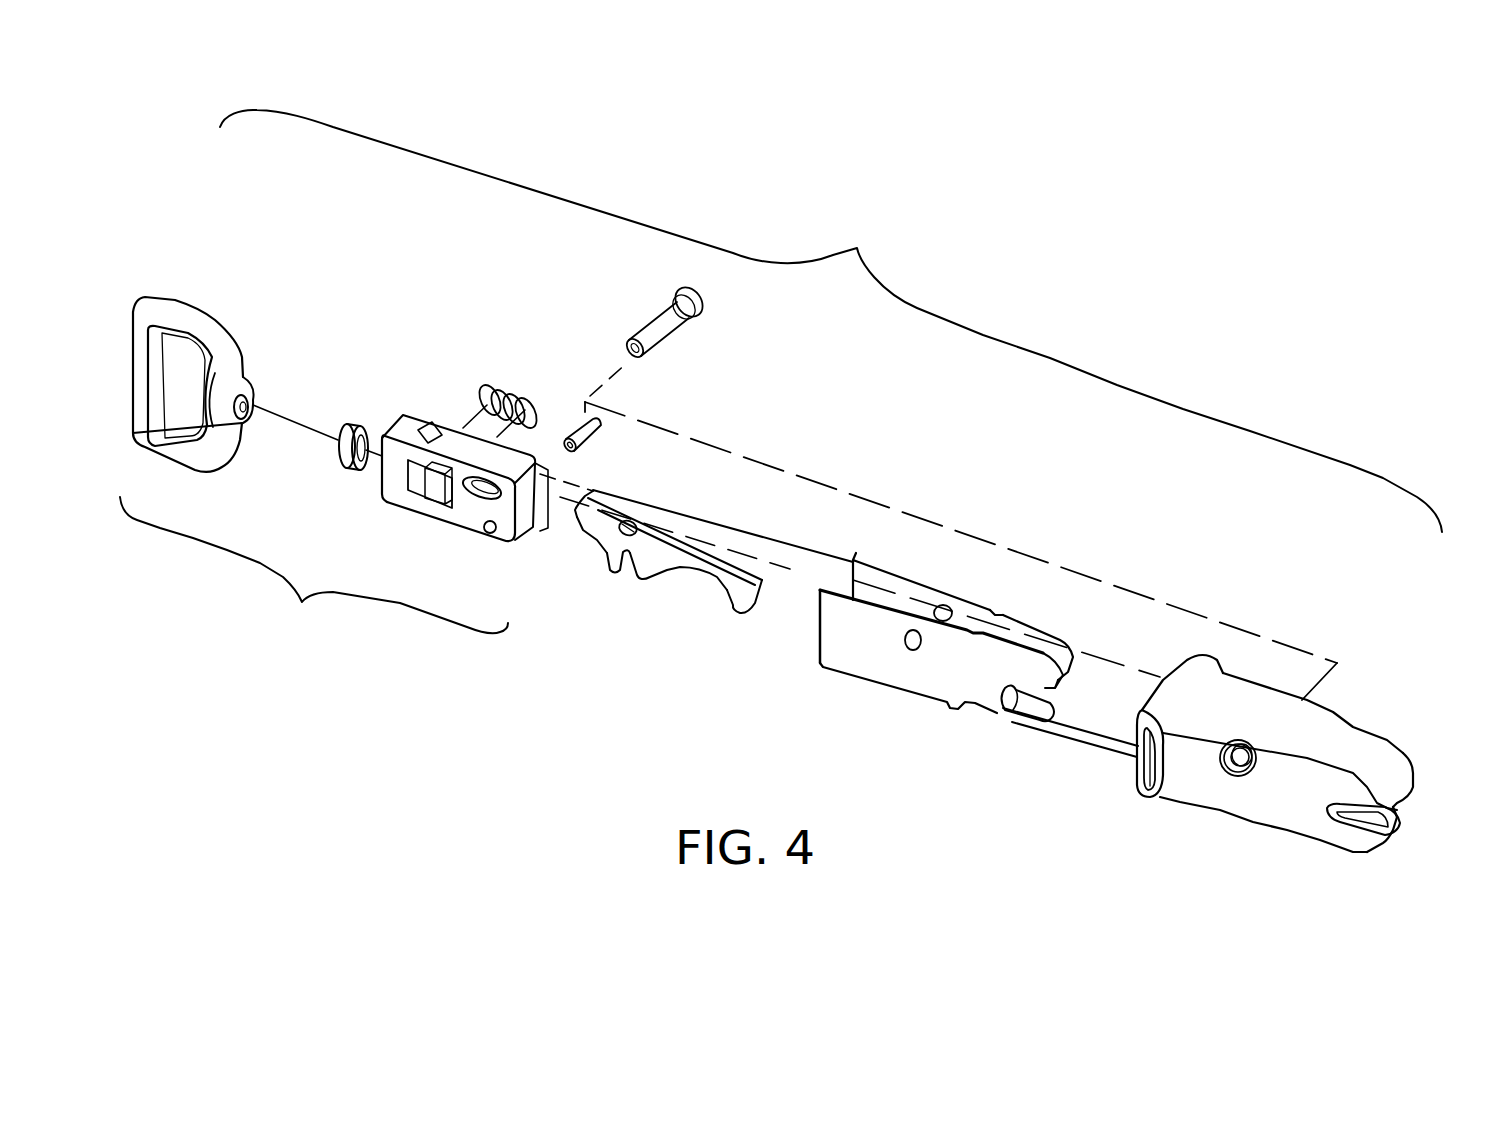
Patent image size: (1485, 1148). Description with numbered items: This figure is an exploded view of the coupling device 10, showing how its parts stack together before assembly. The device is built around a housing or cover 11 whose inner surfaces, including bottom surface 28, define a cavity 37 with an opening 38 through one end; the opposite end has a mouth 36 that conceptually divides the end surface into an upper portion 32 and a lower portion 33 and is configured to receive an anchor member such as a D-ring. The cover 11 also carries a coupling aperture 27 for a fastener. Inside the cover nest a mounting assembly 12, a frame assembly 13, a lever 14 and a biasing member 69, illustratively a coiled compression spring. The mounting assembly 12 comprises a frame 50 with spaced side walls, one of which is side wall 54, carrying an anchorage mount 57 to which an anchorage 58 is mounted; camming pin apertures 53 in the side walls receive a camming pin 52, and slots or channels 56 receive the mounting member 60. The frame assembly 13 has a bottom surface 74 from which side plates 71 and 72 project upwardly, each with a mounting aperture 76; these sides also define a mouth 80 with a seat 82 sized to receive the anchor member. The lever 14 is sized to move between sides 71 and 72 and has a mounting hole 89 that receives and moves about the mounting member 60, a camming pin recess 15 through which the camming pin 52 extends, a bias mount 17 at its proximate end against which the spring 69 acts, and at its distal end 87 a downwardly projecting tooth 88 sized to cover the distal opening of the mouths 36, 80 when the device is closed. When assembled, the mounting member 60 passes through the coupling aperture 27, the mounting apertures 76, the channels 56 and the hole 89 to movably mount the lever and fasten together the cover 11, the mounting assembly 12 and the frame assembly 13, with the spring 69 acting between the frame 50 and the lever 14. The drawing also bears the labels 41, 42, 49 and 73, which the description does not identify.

The coupling device 10 is at (792, 505).
The housing or cover 11 is at (1388, 668).
The mounting assembly 12 is at (360, 443).
The frame assembly 13 is at (882, 690).
The lever member 14 is at (650, 580).
The camming pin recess 15 is at (628, 560).
The bias mount 17 is at (577, 520).
The coupling aperture 27 is at (1236, 777).
The bottom surface 28 is at (1258, 818).
The upper portion 32 is at (1405, 770).
The lower portion 33 is at (1390, 830).
The mouth 36 is at (1403, 808).
The cavity 37 is at (1182, 662).
The opening 38 is at (1137, 768).
The opening 41 is at (1152, 797).
The top edge 42 is at (1225, 668).
The side wall 49 is at (1298, 820).
The frame 50 is at (405, 414).
The camming pin 52 is at (575, 432).
The camming pin apertures 53 is at (491, 534).
The side wall 54 is at (458, 520).
The slots or channels 56 is at (480, 485).
The anchorage mount 57 is at (352, 428).
The anchorage 58 is at (189, 305).
The mounting member 60 is at (703, 310).
The biasing member 69 is at (497, 392).
The side plate 71 is at (882, 580).
The side plate 72 is at (846, 650).
The step 73 is at (972, 618).
The bottom surface 74 is at (908, 695).
The mounting aperture 76 is at (944, 607).
The mouth 80 is at (1063, 690).
The seat 82 is at (1020, 710).
The distal end 87 is at (768, 553).
The tooth 88 is at (737, 610).
The mounting hole 89 is at (632, 520).